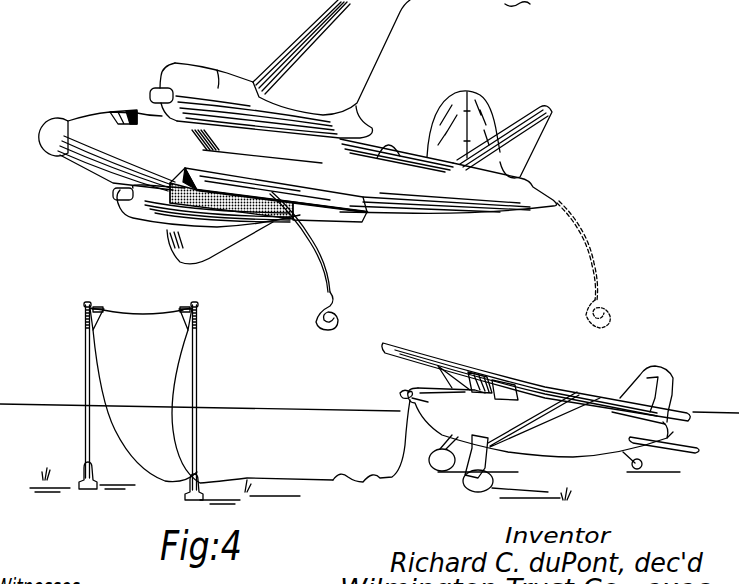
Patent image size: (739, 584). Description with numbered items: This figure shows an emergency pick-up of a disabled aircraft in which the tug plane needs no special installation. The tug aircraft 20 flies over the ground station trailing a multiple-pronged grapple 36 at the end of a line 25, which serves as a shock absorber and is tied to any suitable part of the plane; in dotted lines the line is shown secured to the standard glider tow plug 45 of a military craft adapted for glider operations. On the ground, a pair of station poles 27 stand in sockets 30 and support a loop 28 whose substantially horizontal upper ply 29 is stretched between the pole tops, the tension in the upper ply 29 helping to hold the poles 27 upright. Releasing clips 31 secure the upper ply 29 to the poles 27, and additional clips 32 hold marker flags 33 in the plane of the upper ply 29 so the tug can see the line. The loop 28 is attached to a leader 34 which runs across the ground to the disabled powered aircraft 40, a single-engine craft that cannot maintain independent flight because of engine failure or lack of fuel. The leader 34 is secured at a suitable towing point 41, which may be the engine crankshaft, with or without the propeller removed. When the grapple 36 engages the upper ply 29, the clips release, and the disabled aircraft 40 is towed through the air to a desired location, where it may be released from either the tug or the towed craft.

The aircraft 20 is at (227, 86).
The line 25 is at (327, 256).
The standard glider tow plug 45 is at (560, 203).
The grapple 36 is at (338, 318).
The station poles 27 is at (84, 383).
The releasing clips 31 is at (90, 301).
The clips 32 is at (101, 308).
The upper ply 29 is at (141, 313).
The marker flags 33 is at (85, 319).
The sockets 30 is at (89, 490).
The loop 28 is at (152, 482).
The leader 34 is at (361, 484).
The powered aircraft 40 is at (513, 400).
The towing point 41 is at (408, 390).